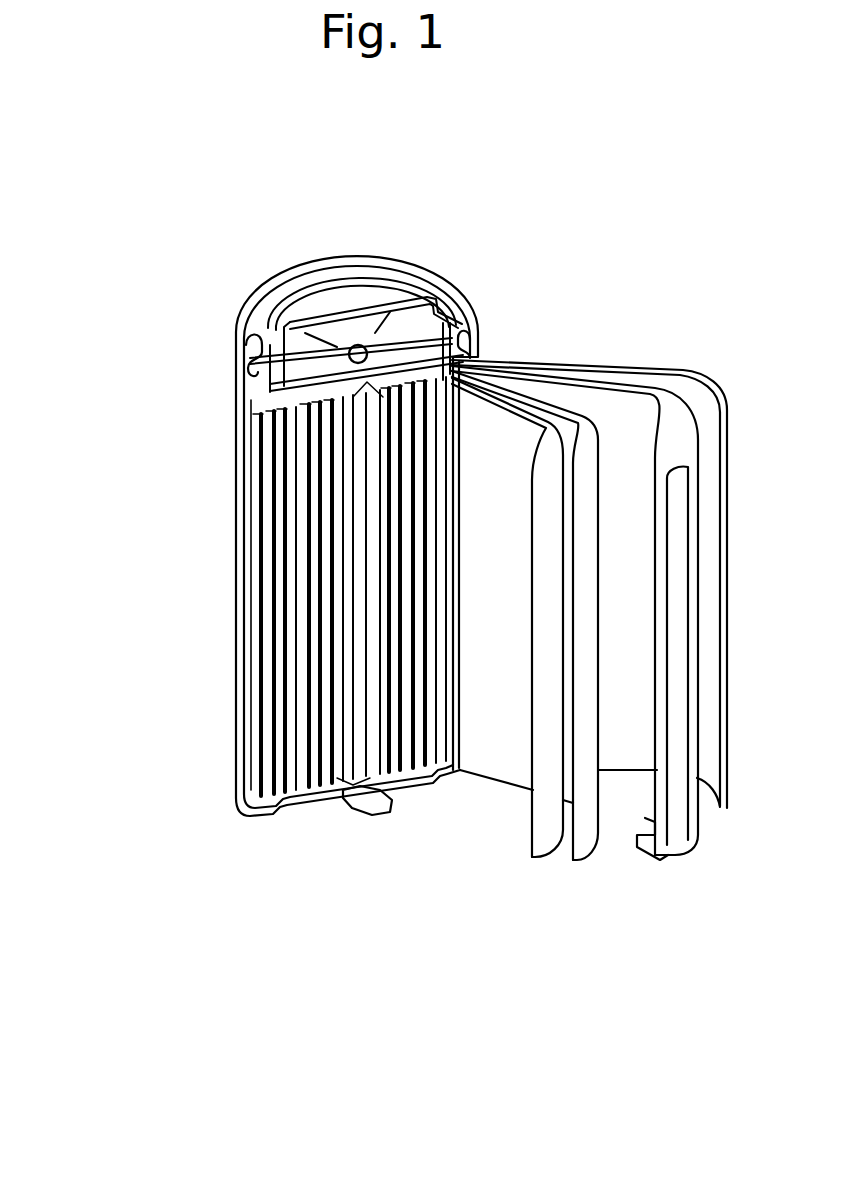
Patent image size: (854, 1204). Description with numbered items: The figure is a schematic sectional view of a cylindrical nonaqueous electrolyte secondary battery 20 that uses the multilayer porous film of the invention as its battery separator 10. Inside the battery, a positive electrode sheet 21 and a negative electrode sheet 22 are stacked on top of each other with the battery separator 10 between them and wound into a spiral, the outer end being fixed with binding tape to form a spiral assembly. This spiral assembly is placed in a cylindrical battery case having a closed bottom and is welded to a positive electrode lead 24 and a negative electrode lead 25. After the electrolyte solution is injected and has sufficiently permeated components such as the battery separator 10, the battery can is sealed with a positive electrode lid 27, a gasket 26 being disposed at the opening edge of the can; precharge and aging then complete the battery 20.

The battery separator 10 is at (578, 862).
The cylindrical nonaqueous electrolyte secondary battery 20 is at (215, 512).
The positive electrode sheet 21 is at (503, 780).
The negative electrode sheet 22 is at (632, 758).
The positive electrode lead 24 is at (363, 346).
The negative electrode lead 25 is at (682, 848).
The gasket 26 is at (253, 380).
The positive electrode lid 27 is at (338, 288).